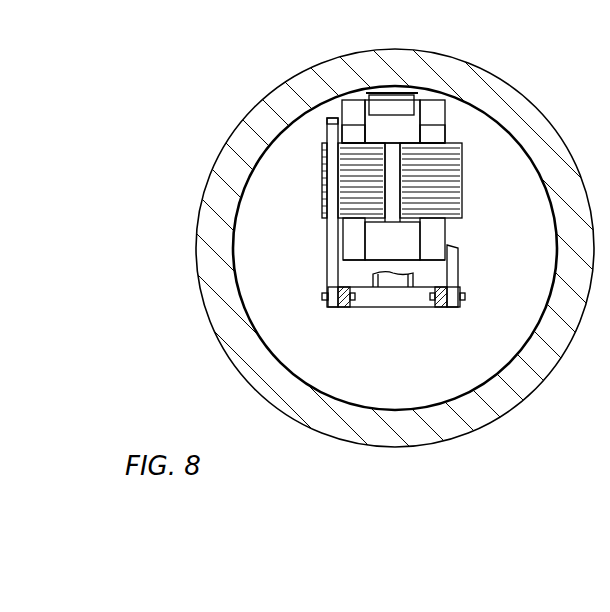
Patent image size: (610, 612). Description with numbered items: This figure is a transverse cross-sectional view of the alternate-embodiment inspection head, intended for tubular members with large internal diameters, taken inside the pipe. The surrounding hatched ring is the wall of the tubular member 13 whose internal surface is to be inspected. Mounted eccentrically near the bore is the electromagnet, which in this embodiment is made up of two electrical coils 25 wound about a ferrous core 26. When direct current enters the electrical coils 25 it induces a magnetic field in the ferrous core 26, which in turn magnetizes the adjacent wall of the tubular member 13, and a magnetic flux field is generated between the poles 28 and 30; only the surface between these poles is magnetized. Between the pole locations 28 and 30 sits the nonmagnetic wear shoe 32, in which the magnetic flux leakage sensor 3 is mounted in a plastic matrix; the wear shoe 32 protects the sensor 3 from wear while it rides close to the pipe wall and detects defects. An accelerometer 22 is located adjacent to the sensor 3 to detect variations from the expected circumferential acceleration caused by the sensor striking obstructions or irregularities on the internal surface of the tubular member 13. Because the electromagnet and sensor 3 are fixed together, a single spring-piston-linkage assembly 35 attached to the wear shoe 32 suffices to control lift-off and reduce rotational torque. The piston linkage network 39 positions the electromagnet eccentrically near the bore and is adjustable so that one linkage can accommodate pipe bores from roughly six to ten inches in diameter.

The tubular member 13 is at (205, 242).
The accelerometer 22 is at (355, 105).
The magnetic pole location 28 is at (355, 105).
The magnetic flux leakage sensor 3 is at (432, 107).
The nonmagnetic wear shoe 32 is at (373, 100).
The magnetic pole location 30 is at (418, 100).
The ferrous core 26 is at (348, 136).
The electrical coil 25 is at (353, 193).
The piston linkage network 39 is at (332, 261).
The spring-piston-linkage assembly 35 is at (392, 290).